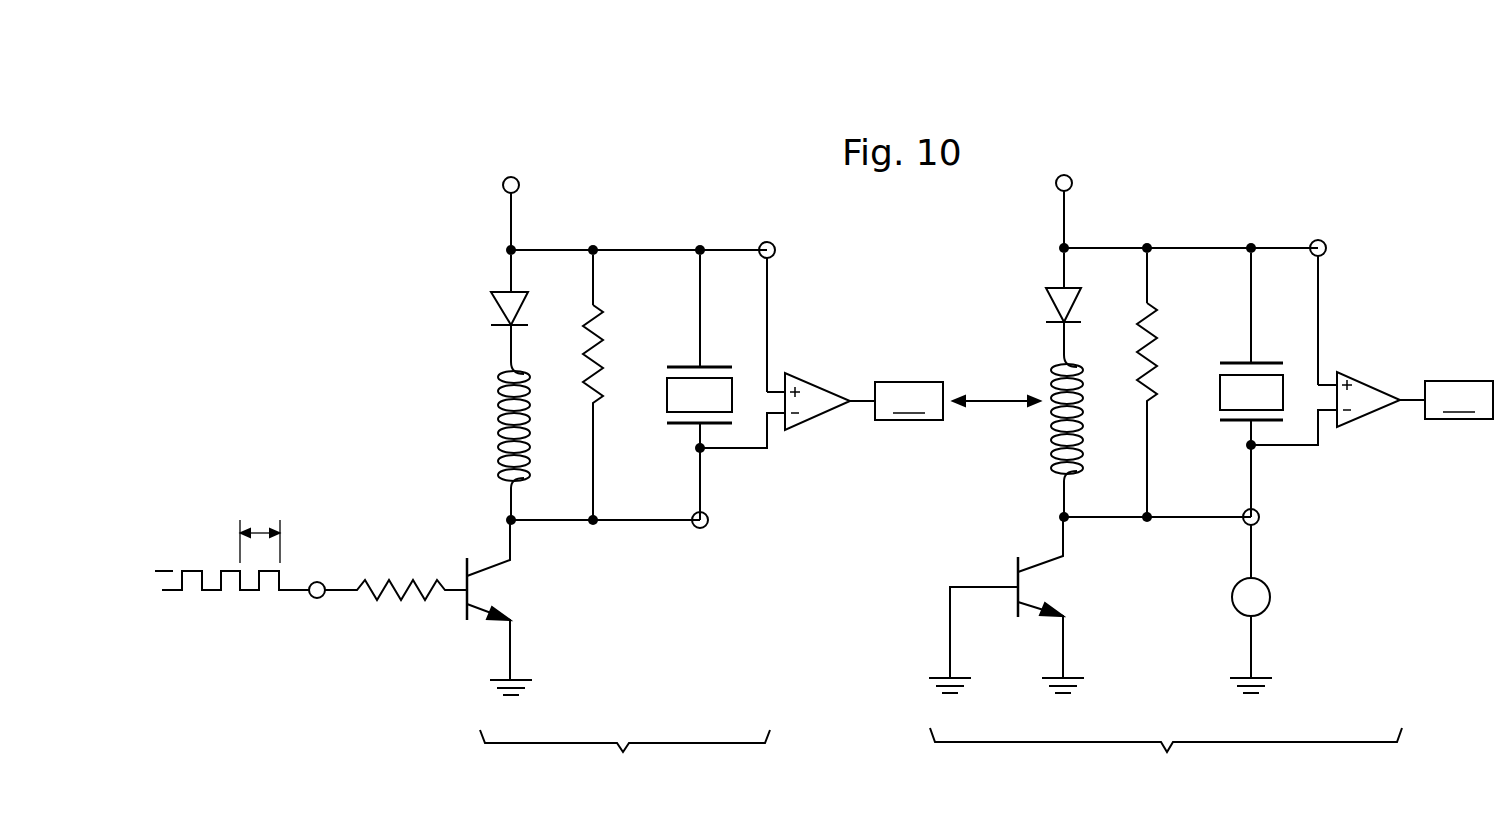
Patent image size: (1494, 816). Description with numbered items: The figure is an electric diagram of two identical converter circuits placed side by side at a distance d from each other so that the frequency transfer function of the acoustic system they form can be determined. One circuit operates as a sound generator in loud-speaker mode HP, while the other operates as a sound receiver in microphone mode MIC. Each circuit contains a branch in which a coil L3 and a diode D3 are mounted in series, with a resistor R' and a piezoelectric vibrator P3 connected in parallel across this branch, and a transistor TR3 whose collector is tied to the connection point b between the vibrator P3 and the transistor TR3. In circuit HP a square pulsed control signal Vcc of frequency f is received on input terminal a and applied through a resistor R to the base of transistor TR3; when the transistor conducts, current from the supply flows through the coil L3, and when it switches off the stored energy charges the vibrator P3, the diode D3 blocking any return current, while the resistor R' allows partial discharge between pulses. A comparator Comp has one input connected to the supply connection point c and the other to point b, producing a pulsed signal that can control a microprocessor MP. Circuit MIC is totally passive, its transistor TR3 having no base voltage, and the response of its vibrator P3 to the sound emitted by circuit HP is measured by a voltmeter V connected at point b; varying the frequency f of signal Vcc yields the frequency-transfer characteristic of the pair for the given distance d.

The connection point c is at (768, 242).
The diode D3 is at (1046, 304).
The coil L3 is at (1048, 452).
The resistor R' is at (895, 386).
The piezoelectric vibrator P3 is at (1273, 331).
The connection point b is at (701, 528).
The analogue-digital comparator Comp is at (808, 410).
The microprocessor MP is at (1184, 400).
The distance d is at (996, 390).
The transistor TR3 is at (1018, 563).
The resistor R is at (396, 562).
The input terminal a is at (320, 580).
The square pulsed control signal Vcc is at (221, 558).
The frequency f is at (260, 535).
The voltmeter V is at (1251, 609).
The loud-speaker mode converter circuit HP is at (625, 757).
The microphone mode converter circuit MIC is at (1166, 756).